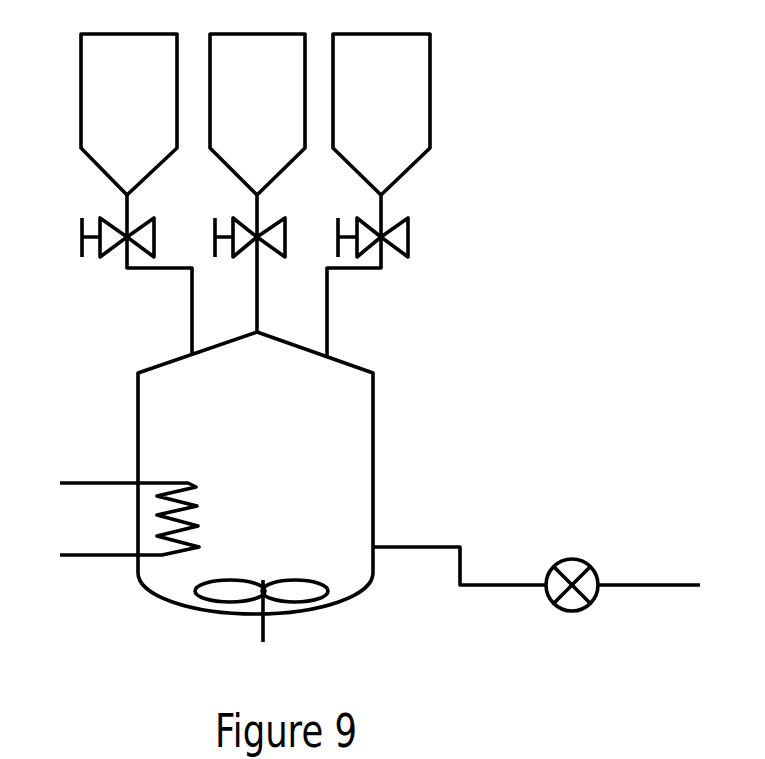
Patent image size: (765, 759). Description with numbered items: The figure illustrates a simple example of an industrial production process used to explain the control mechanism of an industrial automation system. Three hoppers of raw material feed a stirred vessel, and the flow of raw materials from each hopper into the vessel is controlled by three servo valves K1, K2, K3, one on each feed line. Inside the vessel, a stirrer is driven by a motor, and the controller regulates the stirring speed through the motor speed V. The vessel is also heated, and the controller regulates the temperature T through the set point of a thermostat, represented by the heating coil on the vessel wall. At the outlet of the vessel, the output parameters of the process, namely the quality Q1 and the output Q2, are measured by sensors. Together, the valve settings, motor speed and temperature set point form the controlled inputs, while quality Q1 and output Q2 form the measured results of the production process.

The servo valve K1 is at (98, 237).
The servo valve K2 is at (231, 237).
The servo valve K3 is at (355, 237).
The temperature T is at (129, 519).
The motor speed V is at (261, 623).
The quality Q1 is at (578, 569).
The output Q2 is at (578, 569).